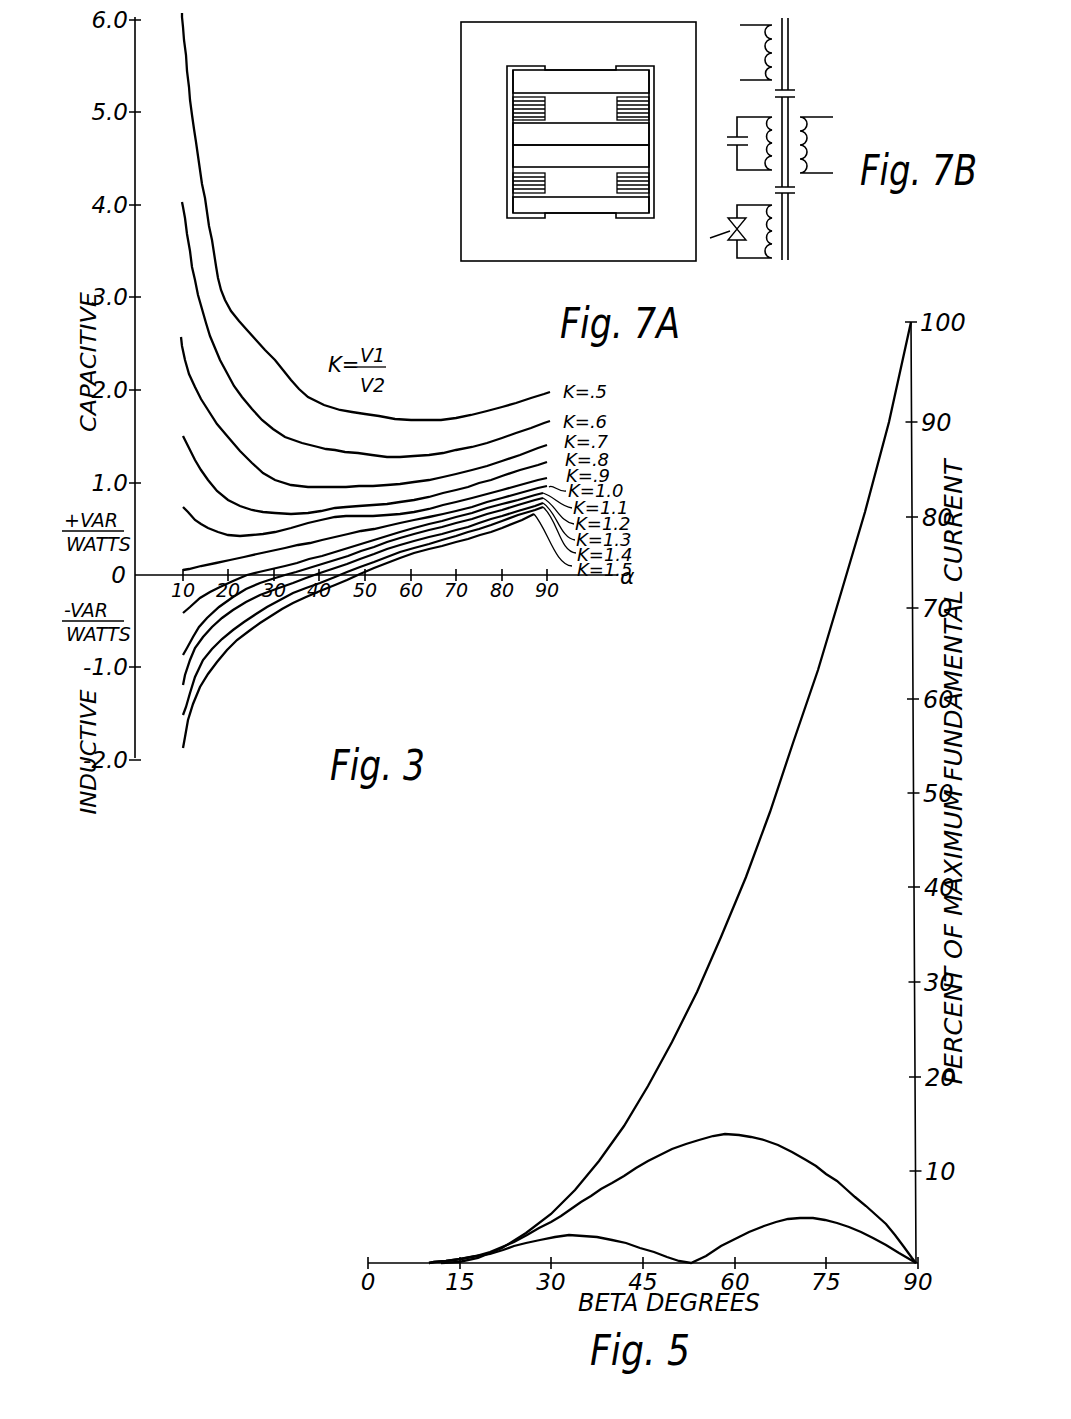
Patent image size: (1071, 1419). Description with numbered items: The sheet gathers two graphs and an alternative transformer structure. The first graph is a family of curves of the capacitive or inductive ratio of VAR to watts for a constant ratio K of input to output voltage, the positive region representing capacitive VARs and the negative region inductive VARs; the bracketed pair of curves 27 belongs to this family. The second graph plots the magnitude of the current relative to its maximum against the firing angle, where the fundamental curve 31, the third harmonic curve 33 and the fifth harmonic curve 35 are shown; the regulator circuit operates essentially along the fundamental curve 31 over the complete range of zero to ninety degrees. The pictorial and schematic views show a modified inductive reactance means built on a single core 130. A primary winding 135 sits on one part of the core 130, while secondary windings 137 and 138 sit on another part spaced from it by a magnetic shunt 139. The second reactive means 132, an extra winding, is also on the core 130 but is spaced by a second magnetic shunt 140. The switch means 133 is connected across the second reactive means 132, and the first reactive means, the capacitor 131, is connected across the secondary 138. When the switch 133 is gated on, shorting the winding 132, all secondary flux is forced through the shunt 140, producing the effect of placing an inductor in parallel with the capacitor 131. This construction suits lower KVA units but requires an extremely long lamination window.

In FIG. 3, the VAR/WATTS characteristic curves 27 is at (318, 402).
In FIG. 5, the fundamental curve 31 is at (733, 895).
In FIG. 5, the third harmonic curve 33 is at (793, 1147).
In FIG. 5, the fifth harmonic curve 35 is at (778, 1218).
In FIG. 7A, the core 130 is at (696, 48).
In FIG. 7B, the core 130 is at (787, 50).
In FIG. 7B, the capacitor 131 is at (730, 148).
In FIG. 7A, the second reactive means 132 is at (603, 210).
In FIG. 7B, the second reactive means 132 is at (772, 228).
In FIG. 7B, the switch means 133 is at (733, 243).
In FIG. 7A, the primary winding 135 is at (575, 78).
In FIG. 7B, the primary winding 135 is at (760, 58).
In FIG. 7A, the secondary winding 137 is at (642, 140).
In FIG. 7B, the secondary winding 137 is at (807, 135).
In FIG. 7A, the secondary winding 138 is at (638, 162).
In FIG. 7B, the secondary winding 138 is at (762, 123).
In FIG. 7A, the magnetic shunt 139 is at (652, 107).
In FIG. 7B, the magnetic shunt 139 is at (793, 92).
In FIG. 7A, the magnetic shunt 140 is at (642, 188).
In FIG. 7B, the magnetic shunt 140 is at (793, 190).